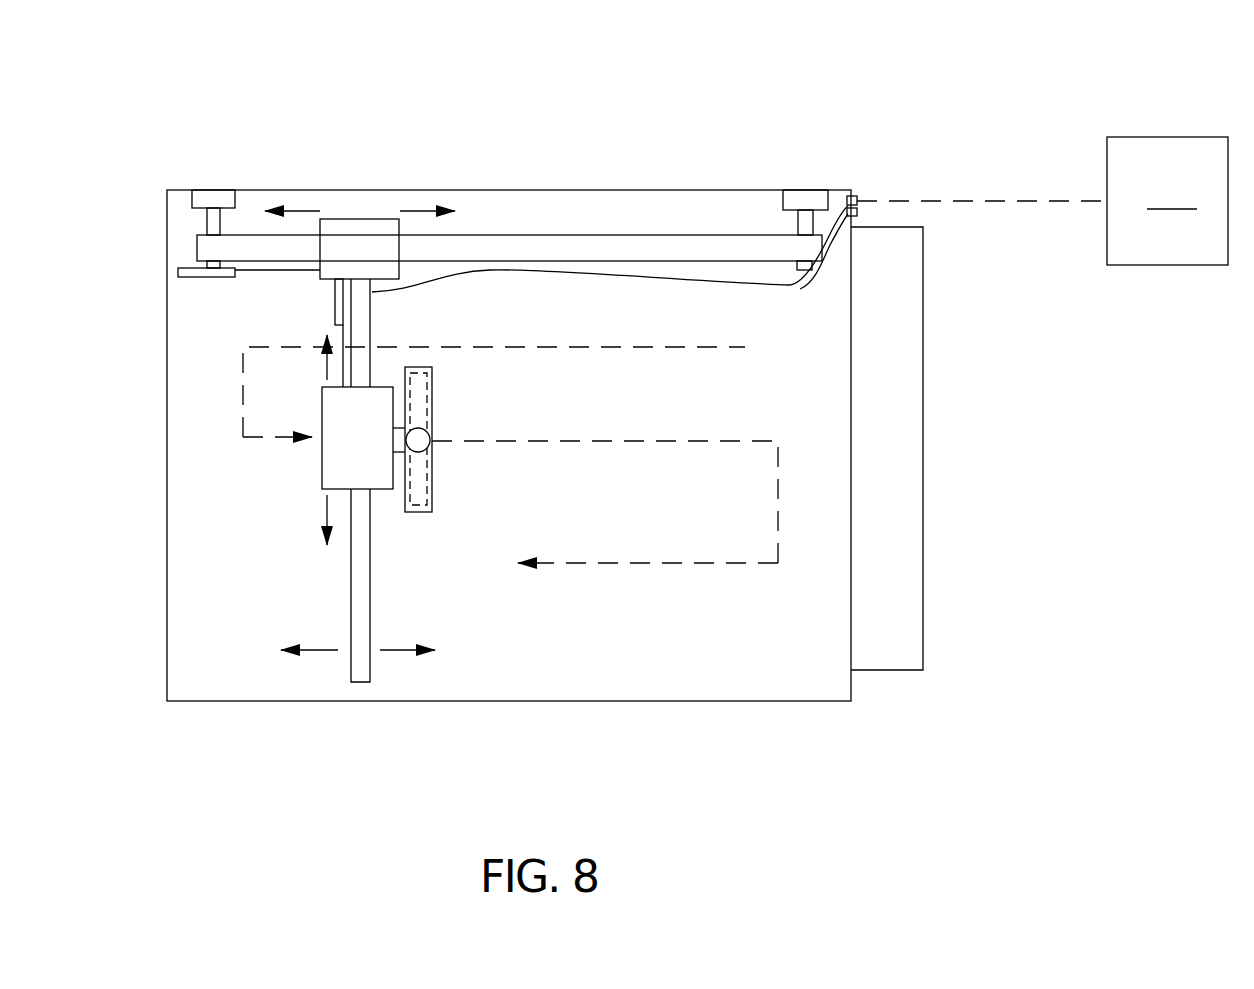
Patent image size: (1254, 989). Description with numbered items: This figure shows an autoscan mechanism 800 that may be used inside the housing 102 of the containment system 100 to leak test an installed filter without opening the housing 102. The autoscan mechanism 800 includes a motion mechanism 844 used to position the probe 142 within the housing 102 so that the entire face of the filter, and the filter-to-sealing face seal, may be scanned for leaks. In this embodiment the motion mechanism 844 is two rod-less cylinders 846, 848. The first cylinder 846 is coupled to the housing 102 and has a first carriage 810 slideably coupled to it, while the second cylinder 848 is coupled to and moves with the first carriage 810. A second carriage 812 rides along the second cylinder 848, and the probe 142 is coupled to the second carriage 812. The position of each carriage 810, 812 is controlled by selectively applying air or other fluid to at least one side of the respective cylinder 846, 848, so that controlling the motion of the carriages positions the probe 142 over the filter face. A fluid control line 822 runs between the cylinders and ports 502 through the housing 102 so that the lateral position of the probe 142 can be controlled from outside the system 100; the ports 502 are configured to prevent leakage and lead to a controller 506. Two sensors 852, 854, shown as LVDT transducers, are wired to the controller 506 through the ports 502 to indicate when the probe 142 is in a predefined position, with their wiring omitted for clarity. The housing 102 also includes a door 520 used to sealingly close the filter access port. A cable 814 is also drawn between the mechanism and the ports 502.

The system 100 is at (770, 83).
The housing 102 is at (167, 668).
The probe 142 is at (433, 388).
The ports 502 is at (862, 188).
The controller 506 is at (1167, 201).
The door 520 is at (923, 370).
The autoscan mechanism 800 is at (220, 357).
The first carriage 810 is at (376, 219).
The second carriage 812 is at (392, 385).
The cable 814 is at (688, 284).
The fluid control line 822 is at (845, 194).
The motion mechanism 844 is at (341, 200).
The first cylinder 846 is at (605, 238).
The second cylinder 848 is at (362, 590).
The sensor 852 is at (190, 268).
The sensor 854 is at (335, 306).